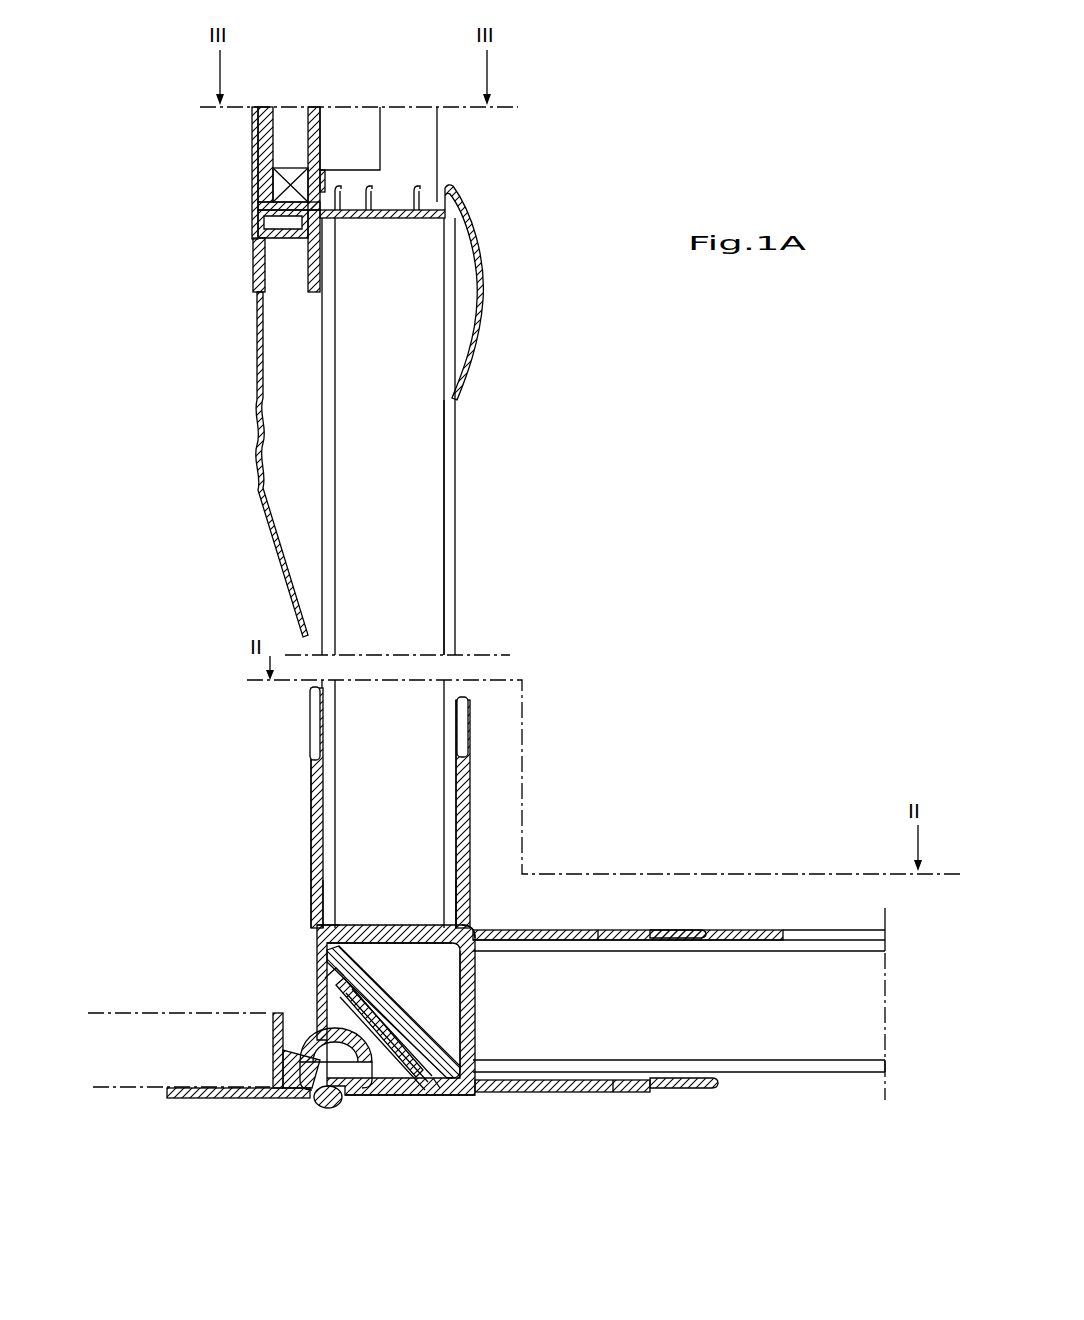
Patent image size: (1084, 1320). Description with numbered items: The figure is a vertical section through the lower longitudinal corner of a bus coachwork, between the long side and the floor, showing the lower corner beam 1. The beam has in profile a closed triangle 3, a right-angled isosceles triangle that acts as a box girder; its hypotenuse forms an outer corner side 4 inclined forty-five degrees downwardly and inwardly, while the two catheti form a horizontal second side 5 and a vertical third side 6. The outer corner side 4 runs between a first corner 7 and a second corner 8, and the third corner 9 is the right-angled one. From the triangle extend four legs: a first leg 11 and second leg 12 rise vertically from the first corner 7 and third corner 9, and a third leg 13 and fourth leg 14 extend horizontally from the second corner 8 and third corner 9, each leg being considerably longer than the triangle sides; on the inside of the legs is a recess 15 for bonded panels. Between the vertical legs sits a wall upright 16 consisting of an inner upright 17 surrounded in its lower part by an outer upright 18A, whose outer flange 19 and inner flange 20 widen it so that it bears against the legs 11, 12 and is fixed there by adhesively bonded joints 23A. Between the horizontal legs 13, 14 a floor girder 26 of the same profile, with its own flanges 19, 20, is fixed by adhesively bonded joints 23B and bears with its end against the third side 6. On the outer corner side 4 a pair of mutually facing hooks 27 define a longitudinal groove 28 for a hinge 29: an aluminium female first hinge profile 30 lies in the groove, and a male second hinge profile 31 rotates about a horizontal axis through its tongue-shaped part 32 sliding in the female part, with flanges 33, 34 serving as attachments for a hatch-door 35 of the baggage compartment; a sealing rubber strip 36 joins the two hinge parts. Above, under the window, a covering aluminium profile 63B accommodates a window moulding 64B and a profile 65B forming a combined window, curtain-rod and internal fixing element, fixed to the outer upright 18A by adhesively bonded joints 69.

The lower corner beam 1 is at (300, 853).
The closed triangle 3 is at (434, 982).
The outer corner side 4 is at (386, 1020).
The second, horizontal side 5 is at (388, 918).
The third, vertical side 6 is at (472, 1006).
The first corner 7 is at (323, 941).
The second corner 8 is at (468, 1097).
The third corner 9 is at (480, 924).
The first leg 11 is at (318, 814).
The second leg 12 is at (462, 813).
The third leg 13 is at (560, 1090).
The fourth leg 14 is at (530, 930).
The recess 15 is at (314, 700).
The wall upright 16 is at (473, 531).
The inner upright 17 is at (428, 157).
The outer upright 18A is at (452, 572).
The outer flange 19 is at (318, 776).
The inner flange 20 is at (462, 769).
The adhesively bonded joint 23A is at (320, 896).
The adhesively bonded joint 23B is at (598, 930).
The floor girder 26 is at (785, 932).
The hooks 27 is at (333, 1000).
The longitudinal groove 28 is at (400, 1032).
The hinge 29 is at (346, 1107).
The first hinge profile 30 is at (360, 980).
The second hinge profile 31 is at (313, 1048).
The tongue-shaped part 32 is at (405, 1042).
The flange 33 is at (278, 1050).
The flange 34 is at (208, 1098).
The hatch-door 35 is at (172, 1010).
The sealing rubber strip 36 is at (325, 1105).
The covering aluminium profile 63B is at (258, 383).
The window moulding 64B is at (258, 222).
The profile 65B is at (482, 290).
The adhesively bonded joint 69 is at (447, 237).